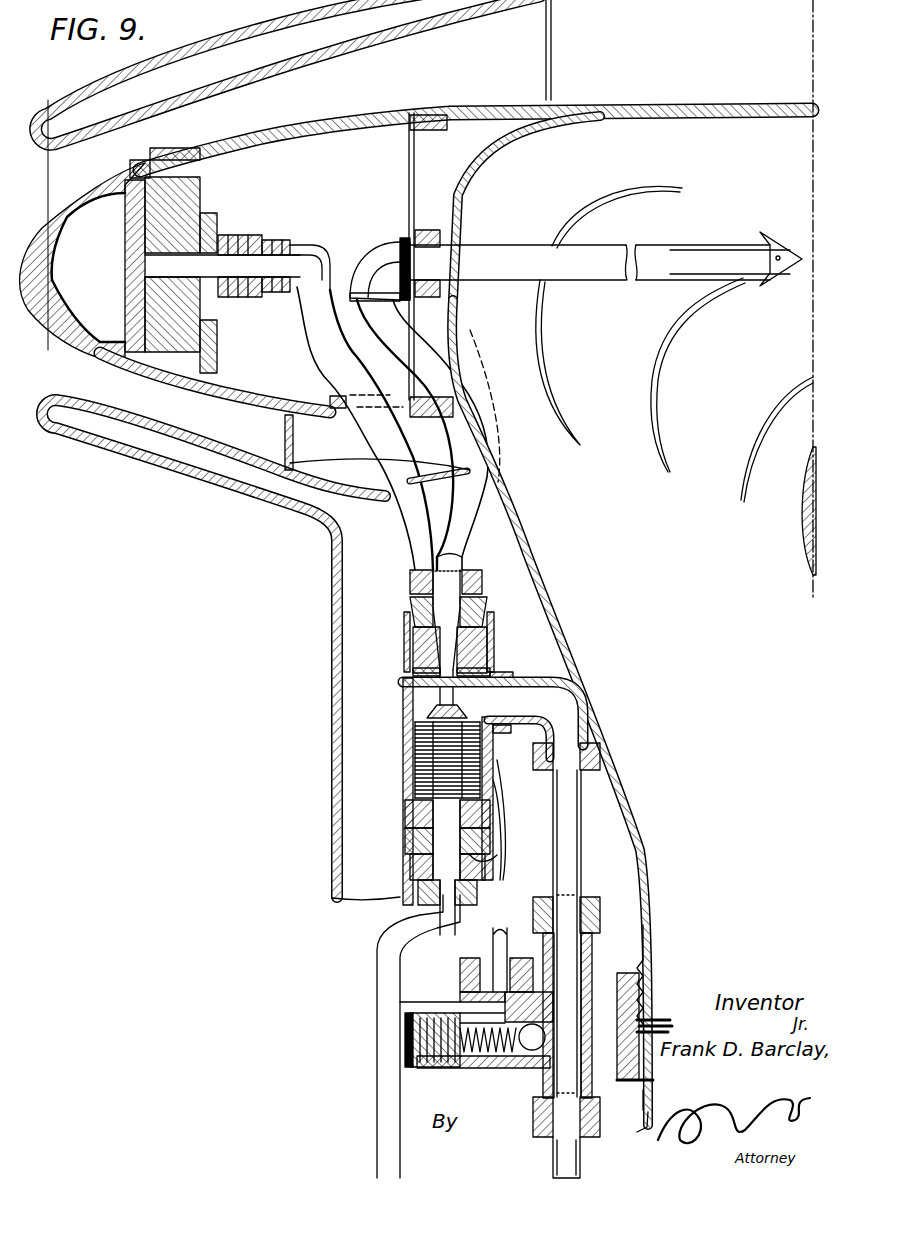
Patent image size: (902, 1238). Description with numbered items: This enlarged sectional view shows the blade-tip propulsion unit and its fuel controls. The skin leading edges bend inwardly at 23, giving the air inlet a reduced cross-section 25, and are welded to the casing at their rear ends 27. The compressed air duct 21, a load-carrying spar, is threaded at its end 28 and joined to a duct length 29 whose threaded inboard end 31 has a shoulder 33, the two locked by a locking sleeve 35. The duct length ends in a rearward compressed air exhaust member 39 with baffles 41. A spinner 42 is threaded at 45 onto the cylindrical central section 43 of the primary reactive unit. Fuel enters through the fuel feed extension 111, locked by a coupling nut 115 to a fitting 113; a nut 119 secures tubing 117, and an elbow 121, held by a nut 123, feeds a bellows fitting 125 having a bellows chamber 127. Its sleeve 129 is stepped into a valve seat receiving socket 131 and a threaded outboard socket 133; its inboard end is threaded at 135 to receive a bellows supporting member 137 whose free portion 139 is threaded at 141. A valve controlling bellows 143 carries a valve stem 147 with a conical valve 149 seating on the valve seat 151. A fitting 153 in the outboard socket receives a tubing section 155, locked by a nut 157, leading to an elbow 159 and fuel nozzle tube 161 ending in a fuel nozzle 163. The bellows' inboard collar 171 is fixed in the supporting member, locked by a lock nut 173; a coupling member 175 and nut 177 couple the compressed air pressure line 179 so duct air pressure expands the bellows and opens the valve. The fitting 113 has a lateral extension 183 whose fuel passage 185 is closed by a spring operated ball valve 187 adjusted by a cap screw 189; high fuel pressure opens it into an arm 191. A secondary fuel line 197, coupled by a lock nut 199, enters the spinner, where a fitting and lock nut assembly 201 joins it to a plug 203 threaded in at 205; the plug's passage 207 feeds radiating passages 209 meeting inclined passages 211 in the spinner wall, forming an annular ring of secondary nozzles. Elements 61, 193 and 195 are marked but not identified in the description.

The duct 21 is at (645, 1118).
The bend 23 is at (50, 114).
The reduced cross-section air inlet end 25 is at (105, 152).
The rear ends of rearwardly bent portions 27 is at (547, 44).
The externally threaded end 28 is at (646, 1100).
The complementary duct length 29 is at (647, 893).
The externally threaded inboard end 31 is at (646, 990).
The shoulder 33 is at (645, 932).
The locking sleeve 35 is at (644, 1081).
The compressed air exhaust member 39 is at (485, 178).
The baffles 41 is at (673, 342).
The spinner 42 is at (212, 147).
The cylindrical central section 43 is at (505, 106).
The threaded attachment 45 is at (421, 114).
The lower strut and wall 61 is at (331, 540).
The fuel feed extension 111 is at (565, 1156).
The fitting 113 is at (592, 1014).
The coupling nut 115 is at (545, 1114).
The section of tubing 117 is at (573, 855).
The nut 119 is at (587, 898).
The elbow 121 is at (586, 695).
The nut 123 is at (600, 768).
The bellows fitting 125 is at (416, 752).
The bellows chamber 127 is at (427, 697).
The sleeve 129 is at (482, 670).
The inboard valve seat receiving socket 131 is at (432, 672).
The outboard interiorly threaded socket 133 is at (420, 648).
The interior threads 135 is at (490, 805).
The bellows supporting member 137 is at (486, 583).
The free extending portion 139 is at (482, 850).
The interior threads 141 is at (475, 857).
The valve controlling bellows 143 is at (471, 719).
The valve stem 147 is at (462, 688).
The conical valve 149 is at (487, 640).
The valve seat 151 is at (487, 662).
The fitting 153 is at (488, 612).
The tubing section 155 is at (462, 540).
The nut 157 is at (468, 571).
The elbow 159 is at (381, 258).
The fuel nozzle tube 161 is at (488, 253).
The fuel nozzle 163 is at (765, 245).
The collar 171 is at (430, 812).
The lock nut 173 is at (428, 830).
The coupling member 175 is at (425, 855).
The nut 177 is at (422, 888).
The compressed air pressure line 179 is at (390, 1003).
The lateral extension 183 is at (472, 1072).
The fuel passage 185 is at (538, 1065).
The spring operated ball valve 187 is at (490, 1062).
The cap screw 189 is at (410, 1048).
The arm 191 is at (490, 1004).
The guide block 193 is at (505, 958).
The spring seat 195 is at (482, 1074).
The fuel line 197 is at (407, 497).
The lock nut 199 is at (470, 968).
The fitting and coupling or lock nut assembly 201 is at (222, 233).
The plug 203 is at (180, 196).
The threaded engagement 205 is at (192, 165).
The fuel passage 207 is at (175, 235).
The radiating fuel passages 209 is at (126, 358).
The rearwardly inclined fuel passages 211 is at (158, 150).